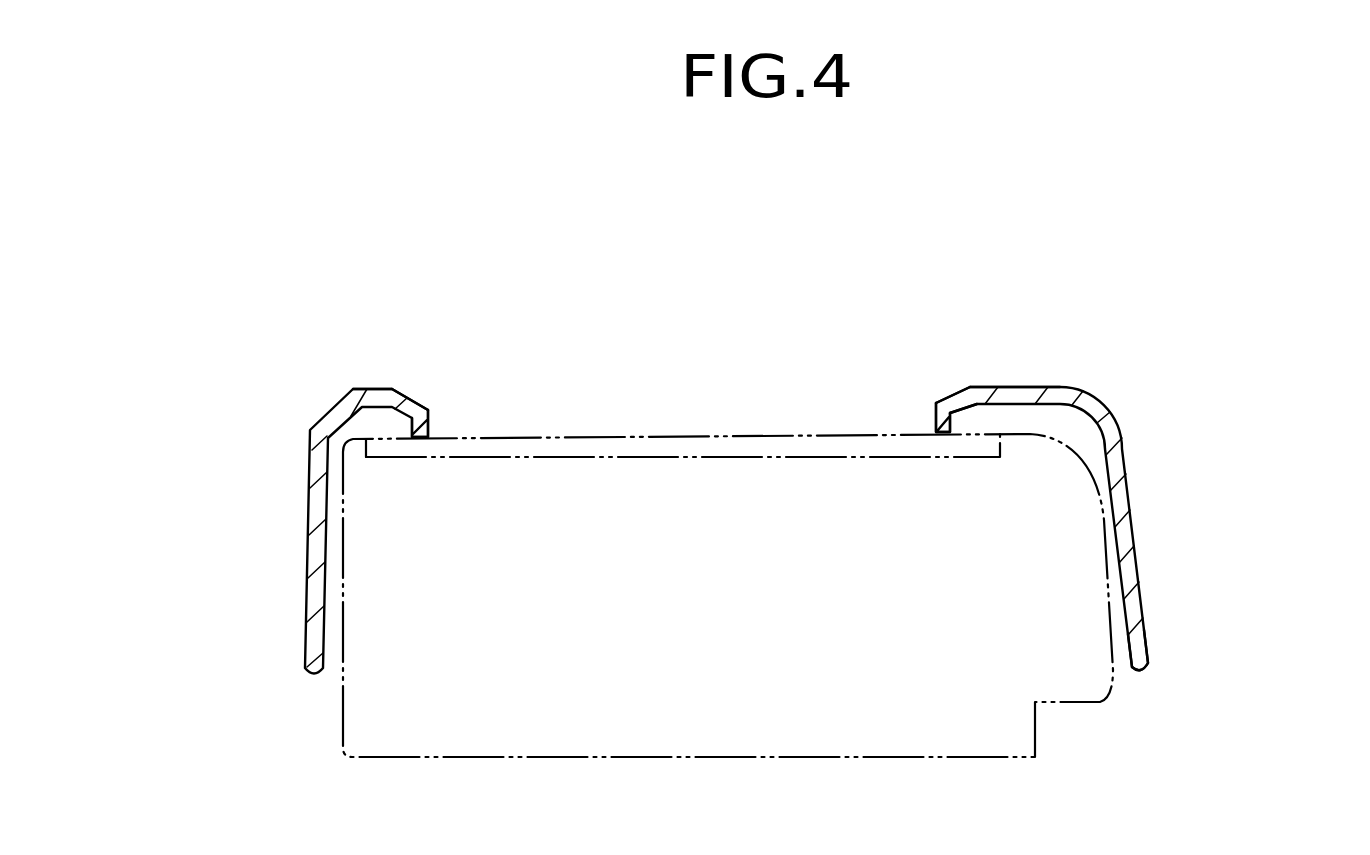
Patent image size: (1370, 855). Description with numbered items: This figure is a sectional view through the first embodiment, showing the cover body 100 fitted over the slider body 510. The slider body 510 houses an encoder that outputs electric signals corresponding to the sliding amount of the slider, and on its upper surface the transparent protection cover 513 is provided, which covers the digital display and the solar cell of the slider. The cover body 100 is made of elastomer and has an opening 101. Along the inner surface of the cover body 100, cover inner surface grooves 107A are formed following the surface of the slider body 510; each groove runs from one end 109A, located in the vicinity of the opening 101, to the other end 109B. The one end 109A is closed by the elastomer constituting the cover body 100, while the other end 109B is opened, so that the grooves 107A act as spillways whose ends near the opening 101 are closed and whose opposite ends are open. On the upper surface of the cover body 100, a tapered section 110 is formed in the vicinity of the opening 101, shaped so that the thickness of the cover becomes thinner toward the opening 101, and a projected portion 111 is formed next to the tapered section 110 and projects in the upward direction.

The cover body 100 is at (755, 525).
The opening 101 is at (430, 423).
The cover inner surface grooves 107A is at (333, 553).
The one end 109A is at (967, 408).
The other end 109B is at (1122, 660).
The tapered section 110 is at (413, 402).
The projected portion 111 is at (378, 388).
The slider body 510 is at (882, 758).
The transparent protection cover 513 is at (633, 437).